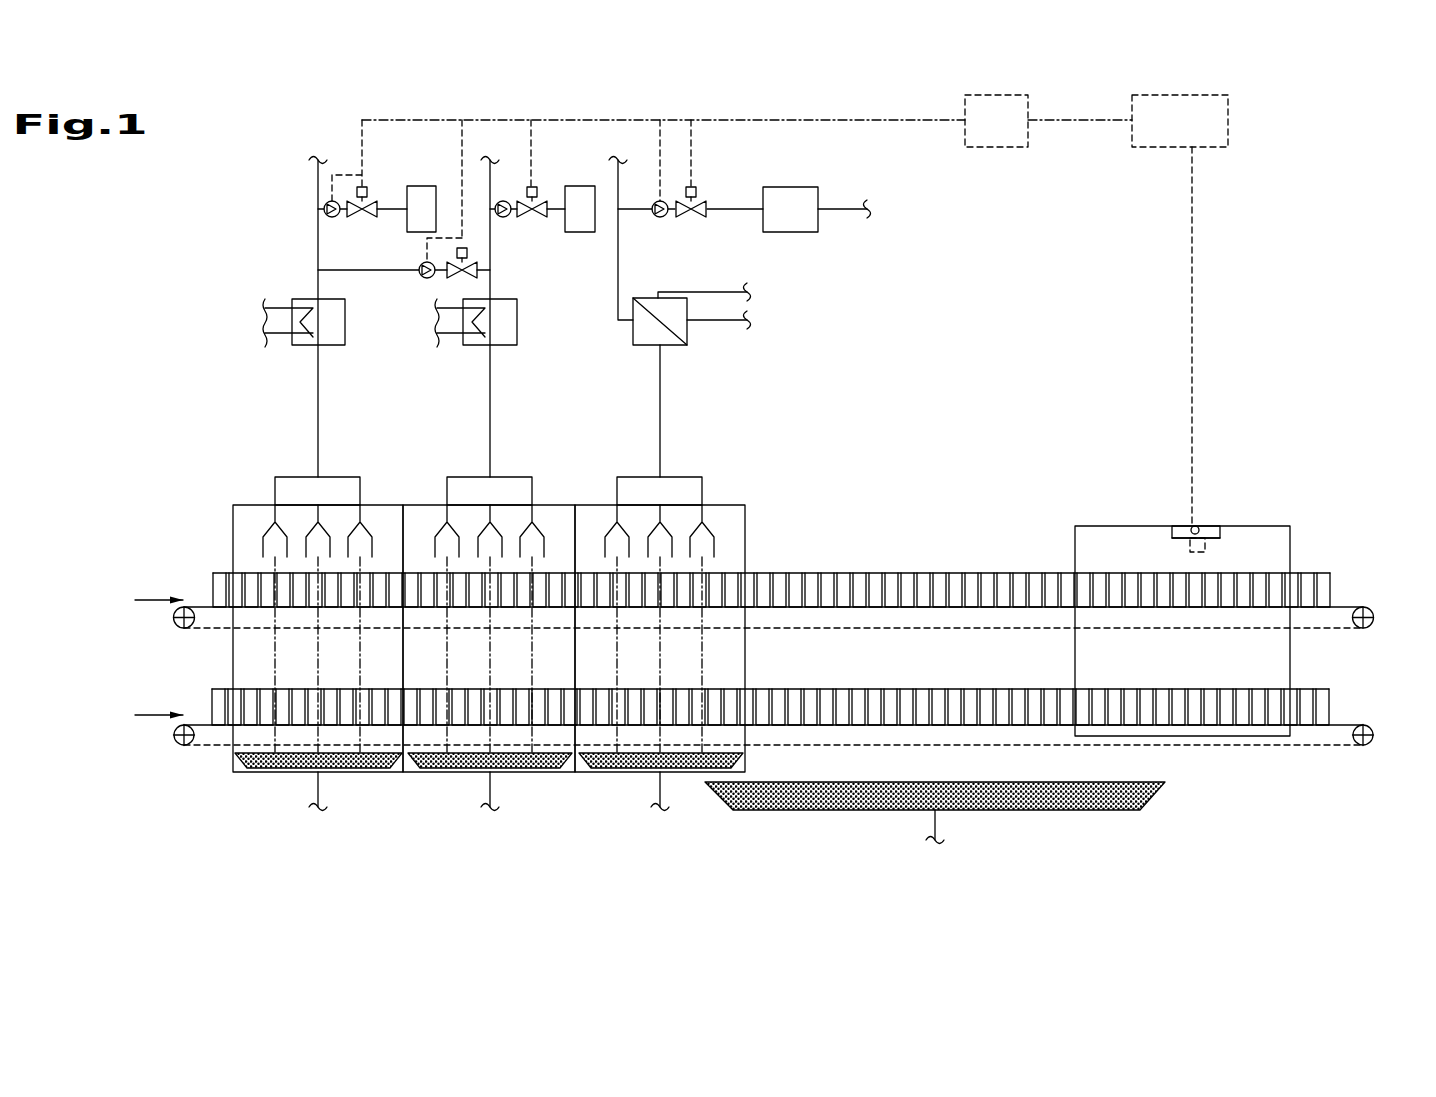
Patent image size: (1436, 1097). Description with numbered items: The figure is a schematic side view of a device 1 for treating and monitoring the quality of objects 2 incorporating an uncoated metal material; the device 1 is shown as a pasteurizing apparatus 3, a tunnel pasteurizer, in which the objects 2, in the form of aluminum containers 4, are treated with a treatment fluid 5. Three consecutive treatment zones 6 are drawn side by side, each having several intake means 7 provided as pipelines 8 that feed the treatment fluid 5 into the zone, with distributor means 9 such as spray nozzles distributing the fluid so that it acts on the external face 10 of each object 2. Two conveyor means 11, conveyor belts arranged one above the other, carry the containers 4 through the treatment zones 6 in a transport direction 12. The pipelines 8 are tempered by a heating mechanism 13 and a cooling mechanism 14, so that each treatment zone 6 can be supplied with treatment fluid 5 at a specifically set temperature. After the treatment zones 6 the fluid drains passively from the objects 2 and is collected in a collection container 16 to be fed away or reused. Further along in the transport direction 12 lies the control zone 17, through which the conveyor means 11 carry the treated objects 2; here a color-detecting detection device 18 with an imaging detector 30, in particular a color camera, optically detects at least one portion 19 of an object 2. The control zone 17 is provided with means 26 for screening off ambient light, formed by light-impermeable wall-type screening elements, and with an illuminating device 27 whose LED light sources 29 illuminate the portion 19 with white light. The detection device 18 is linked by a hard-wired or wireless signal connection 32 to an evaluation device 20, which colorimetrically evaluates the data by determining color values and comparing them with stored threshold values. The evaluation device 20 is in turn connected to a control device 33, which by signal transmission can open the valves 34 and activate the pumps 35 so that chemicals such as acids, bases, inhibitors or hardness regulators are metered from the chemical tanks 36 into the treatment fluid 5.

The device 1 is at (1340, 165).
The objects 2 is at (776, 694).
The pasteurizing apparatus 3 is at (606, 882).
The containers 4 is at (215, 570).
The treatment fluid 5 is at (548, 560).
The treatment zone 6 is at (243, 478).
The intake means 7 is at (352, 478).
The pipelines 8 is at (318, 400).
The distributor means 9 is at (283, 478).
The external face 10 is at (737, 694).
The conveyor means 11 is at (195, 593).
The transport direction 12 is at (157, 715).
The heating mechanism 13 is at (294, 291).
The cooling mechanism 14 is at (690, 342).
The collection container 16 is at (728, 810).
The control zone 17 is at (1100, 524).
The color-detecting detection device 18 is at (1199, 428).
The portion 19 is at (1240, 525).
The evaluation device 20 is at (1173, 92).
The means for partitioning off and/or screening off ambient light 26 is at (1295, 512).
The illuminating device 27 is at (1198, 524).
The light sources 29 is at (1220, 525).
The imaging detector 30 is at (1190, 524).
The signal connection 32 is at (1192, 208).
The control device 33 is at (992, 150).
The valves 34 is at (702, 197).
The pumps 35 is at (657, 199).
The chemical tanks 36 is at (418, 185).